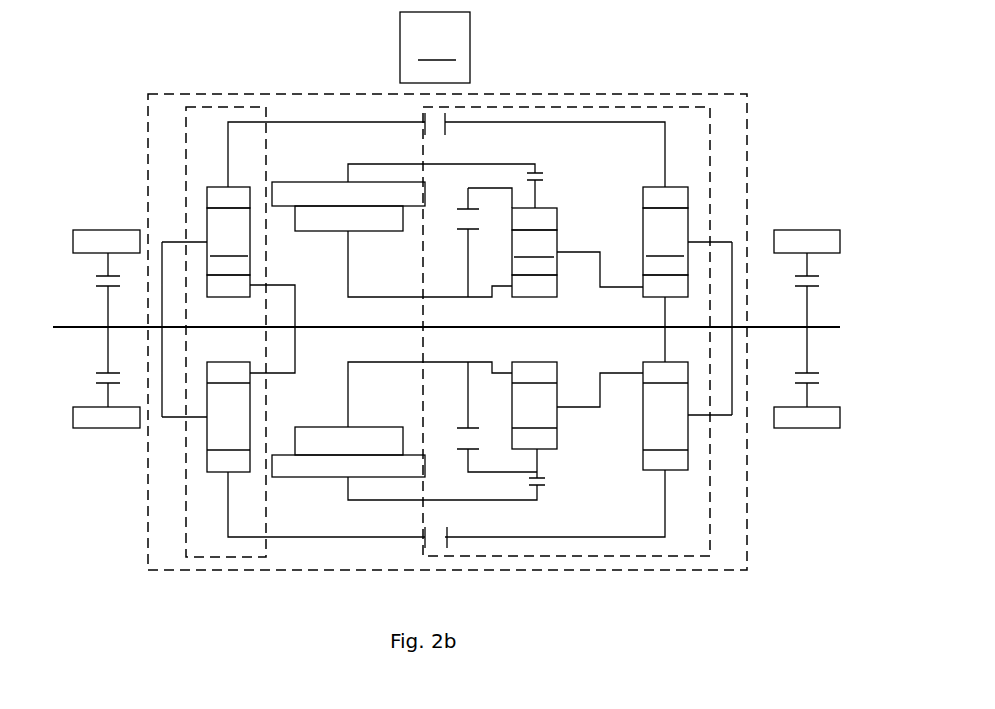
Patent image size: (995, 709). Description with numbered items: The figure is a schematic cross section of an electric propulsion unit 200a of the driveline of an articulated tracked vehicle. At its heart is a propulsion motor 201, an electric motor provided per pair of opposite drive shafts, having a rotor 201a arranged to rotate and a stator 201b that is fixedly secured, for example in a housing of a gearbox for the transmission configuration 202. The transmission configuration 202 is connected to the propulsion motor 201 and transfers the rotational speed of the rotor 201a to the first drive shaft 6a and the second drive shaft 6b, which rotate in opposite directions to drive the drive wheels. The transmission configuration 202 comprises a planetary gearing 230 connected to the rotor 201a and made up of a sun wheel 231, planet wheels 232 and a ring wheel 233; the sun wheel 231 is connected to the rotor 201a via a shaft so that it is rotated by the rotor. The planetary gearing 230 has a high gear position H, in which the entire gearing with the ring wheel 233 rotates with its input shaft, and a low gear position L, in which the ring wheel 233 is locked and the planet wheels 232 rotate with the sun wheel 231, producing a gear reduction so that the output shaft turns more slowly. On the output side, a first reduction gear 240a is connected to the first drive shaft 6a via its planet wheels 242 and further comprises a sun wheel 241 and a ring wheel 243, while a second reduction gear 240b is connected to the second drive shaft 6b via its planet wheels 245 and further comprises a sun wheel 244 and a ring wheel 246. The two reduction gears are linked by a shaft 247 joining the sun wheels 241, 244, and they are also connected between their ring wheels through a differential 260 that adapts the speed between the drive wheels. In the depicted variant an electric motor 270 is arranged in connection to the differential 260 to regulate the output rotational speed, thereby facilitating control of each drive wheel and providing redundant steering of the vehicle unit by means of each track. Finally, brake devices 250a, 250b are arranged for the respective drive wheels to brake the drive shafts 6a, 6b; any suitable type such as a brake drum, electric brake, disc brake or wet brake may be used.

The electric motor 270 is at (435, 113).
The electric propulsion unit 200a is at (575, 84).
The transmission configuration 202 is at (241, 100).
The ring wheel 246 is at (217, 197).
The planet wheels 245 is at (228, 241).
The sun wheel 244 is at (232, 290).
The second reduction gear 240b is at (250, 330).
The ring wheel 243 is at (675, 197).
The planet wheels 242 is at (665, 241).
The sun wheel 241 is at (662, 288).
The first reduction gear 240a is at (638, 330).
The ring wheel 233 is at (543, 222).
The planet wheel 232 is at (534, 252).
The sun wheel 231 is at (538, 292).
The planetary gearing 230 is at (577, 314).
The propulsion motor 201 is at (399, 320).
The rotor 201a is at (310, 232).
The stator 201b is at (313, 182).
The high gear position H is at (455, 221).
The low gear position L is at (556, 176).
The shaft 247 is at (432, 330).
The differential 260 is at (433, 548).
The brake device 250a is at (810, 224).
The brake device 250b is at (110, 438).
The first drive shaft 6a is at (815, 331).
The second drive shaft 6b is at (68, 331).